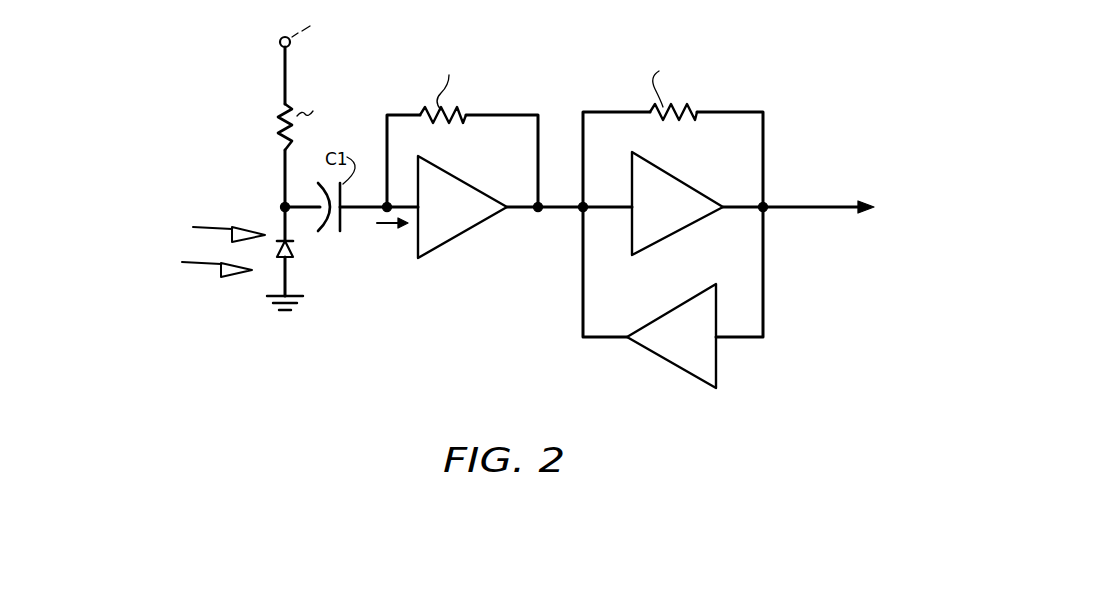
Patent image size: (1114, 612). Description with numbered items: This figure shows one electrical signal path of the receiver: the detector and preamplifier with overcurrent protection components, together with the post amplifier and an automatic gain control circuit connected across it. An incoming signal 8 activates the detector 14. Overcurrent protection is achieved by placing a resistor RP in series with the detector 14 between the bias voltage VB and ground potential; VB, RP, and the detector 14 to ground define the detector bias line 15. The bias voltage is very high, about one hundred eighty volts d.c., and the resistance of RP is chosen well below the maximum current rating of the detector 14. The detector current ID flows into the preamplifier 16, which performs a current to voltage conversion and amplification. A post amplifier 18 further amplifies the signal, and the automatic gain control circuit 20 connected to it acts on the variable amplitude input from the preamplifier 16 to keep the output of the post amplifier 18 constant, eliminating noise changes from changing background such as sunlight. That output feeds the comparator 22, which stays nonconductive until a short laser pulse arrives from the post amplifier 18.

The incoming signal 8 is at (228, 232).
The detector 14 is at (296, 247).
The detector bias line 15 is at (262, 74).
The preamplifier 16 is at (465, 232).
The post amplifier 18 is at (684, 178).
The automatic gain control circuit 20 is at (674, 361).
The comparator 22 is at (927, 217).